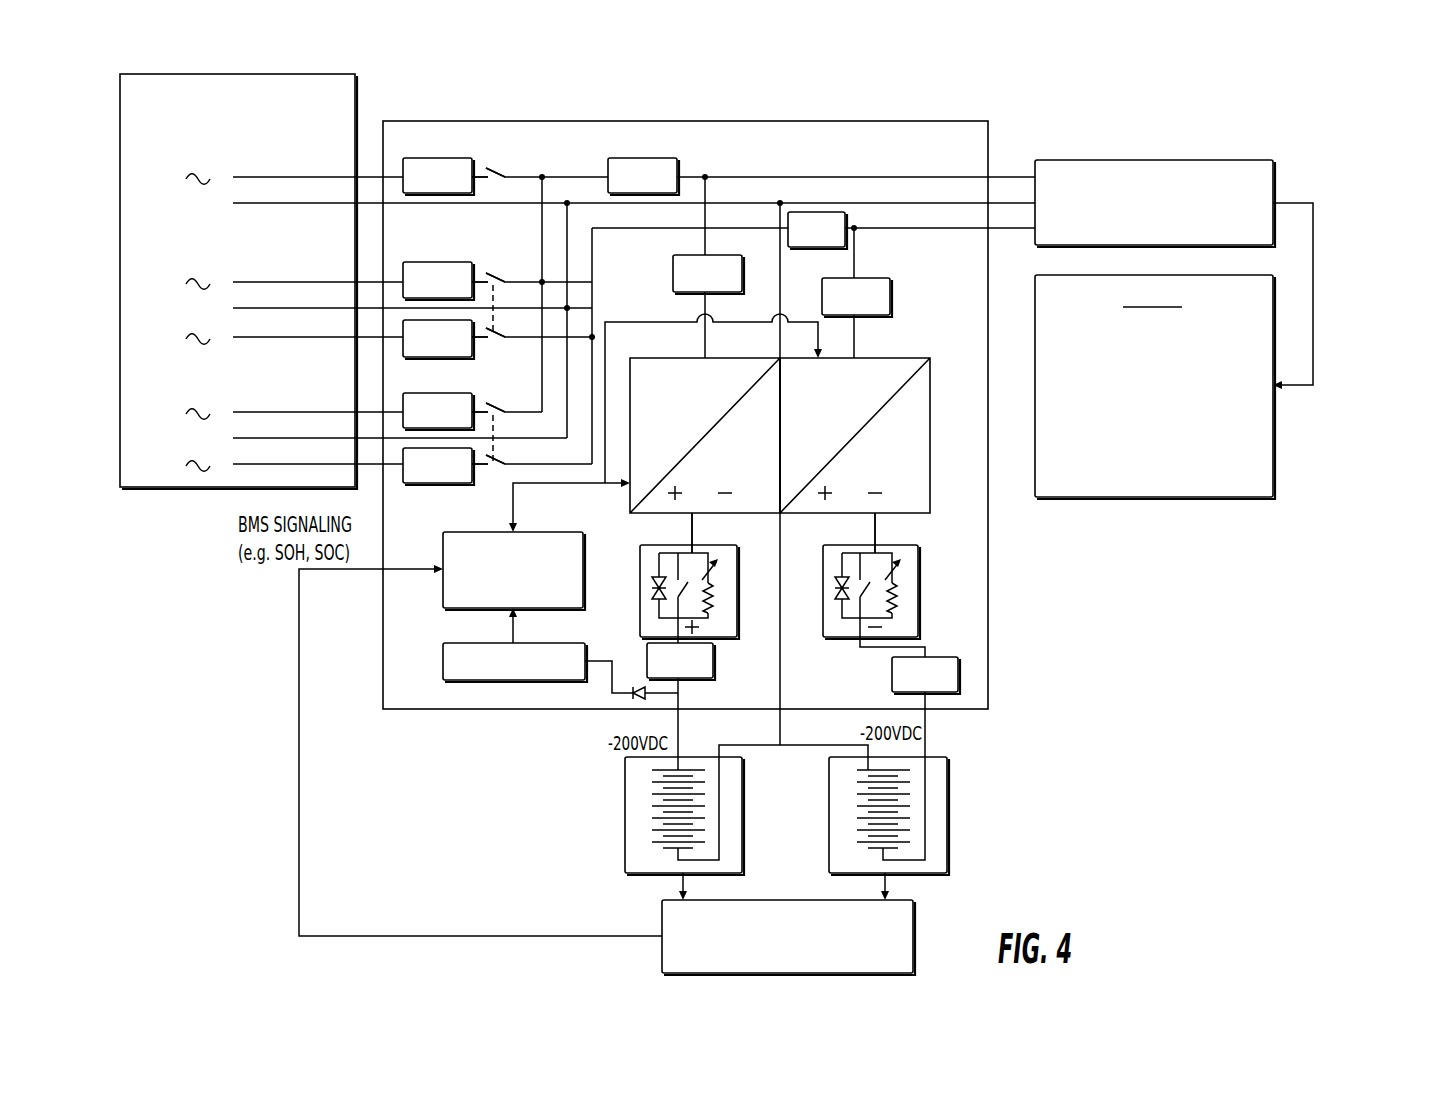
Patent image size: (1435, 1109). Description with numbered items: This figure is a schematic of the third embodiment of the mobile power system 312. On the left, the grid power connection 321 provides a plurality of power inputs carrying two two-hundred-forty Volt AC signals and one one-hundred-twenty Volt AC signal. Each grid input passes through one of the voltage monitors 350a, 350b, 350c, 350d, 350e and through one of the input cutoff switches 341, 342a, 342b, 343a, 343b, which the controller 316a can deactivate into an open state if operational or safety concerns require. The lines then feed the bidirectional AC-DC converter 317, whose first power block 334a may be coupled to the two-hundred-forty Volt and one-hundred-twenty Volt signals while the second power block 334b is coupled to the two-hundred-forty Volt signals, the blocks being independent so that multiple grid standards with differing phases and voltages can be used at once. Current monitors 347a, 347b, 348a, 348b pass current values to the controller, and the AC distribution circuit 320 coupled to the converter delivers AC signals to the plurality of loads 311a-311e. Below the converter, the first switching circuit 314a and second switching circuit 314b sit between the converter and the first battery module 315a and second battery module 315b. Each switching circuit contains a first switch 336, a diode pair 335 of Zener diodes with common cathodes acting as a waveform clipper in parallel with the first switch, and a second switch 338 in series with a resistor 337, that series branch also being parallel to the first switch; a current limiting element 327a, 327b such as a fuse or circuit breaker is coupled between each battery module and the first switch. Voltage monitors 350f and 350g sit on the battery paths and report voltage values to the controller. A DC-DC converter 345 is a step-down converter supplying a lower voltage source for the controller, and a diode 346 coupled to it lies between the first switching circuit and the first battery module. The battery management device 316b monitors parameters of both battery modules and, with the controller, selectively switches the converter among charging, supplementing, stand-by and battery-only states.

The mobile power system 312 is at (1322, 117).
The grid power connection 321 is at (147, 482).
The AC distribution circuit 320 is at (1258, 188).
The plurality of loads 311a-311e is at (1263, 412).
The input cutoff switch 341 is at (497, 172).
The input cutoff switch 342a is at (497, 273).
The input cutoff switch 342b is at (500, 332).
The input cutoff switch 343a is at (496, 403).
The input cutoff switch 343b is at (503, 465).
The voltage monitor 350a is at (418, 188).
The voltage monitor 350b is at (418, 292).
The voltage monitor 350c is at (418, 351).
The voltage monitor 350d is at (418, 423).
The voltage monitor 350e is at (418, 478).
The voltage monitor 350f is at (661, 673).
The voltage monitor 350g is at (905, 687).
The current monitor 347a is at (623, 188).
The current monitor 347b is at (688, 286).
The current monitor 348a is at (797, 242).
The current monitor 348b is at (837, 309).
The bidirectional AC-DC converter 317 is at (797, 410).
The first power block 334a is at (735, 440).
The second power block 334b is at (920, 387).
The current limiting element 327a is at (694, 519).
The current limiting element 327b is at (877, 519).
The first switching circuit 314a is at (721, 608).
The second switching circuit 314b is at (927, 629).
The diode pair 335 is at (652, 582).
The first switch 336 is at (677, 587).
The resistor 337 is at (708, 600).
The second switch 338 is at (713, 569).
The controller 316a is at (567, 597).
The DC-DC converter 345 is at (443, 653).
The diode 346 is at (633, 698).
The first battery module 315a is at (628, 783).
The second battery module 315b is at (938, 795).
The battery management device 316b is at (805, 961).